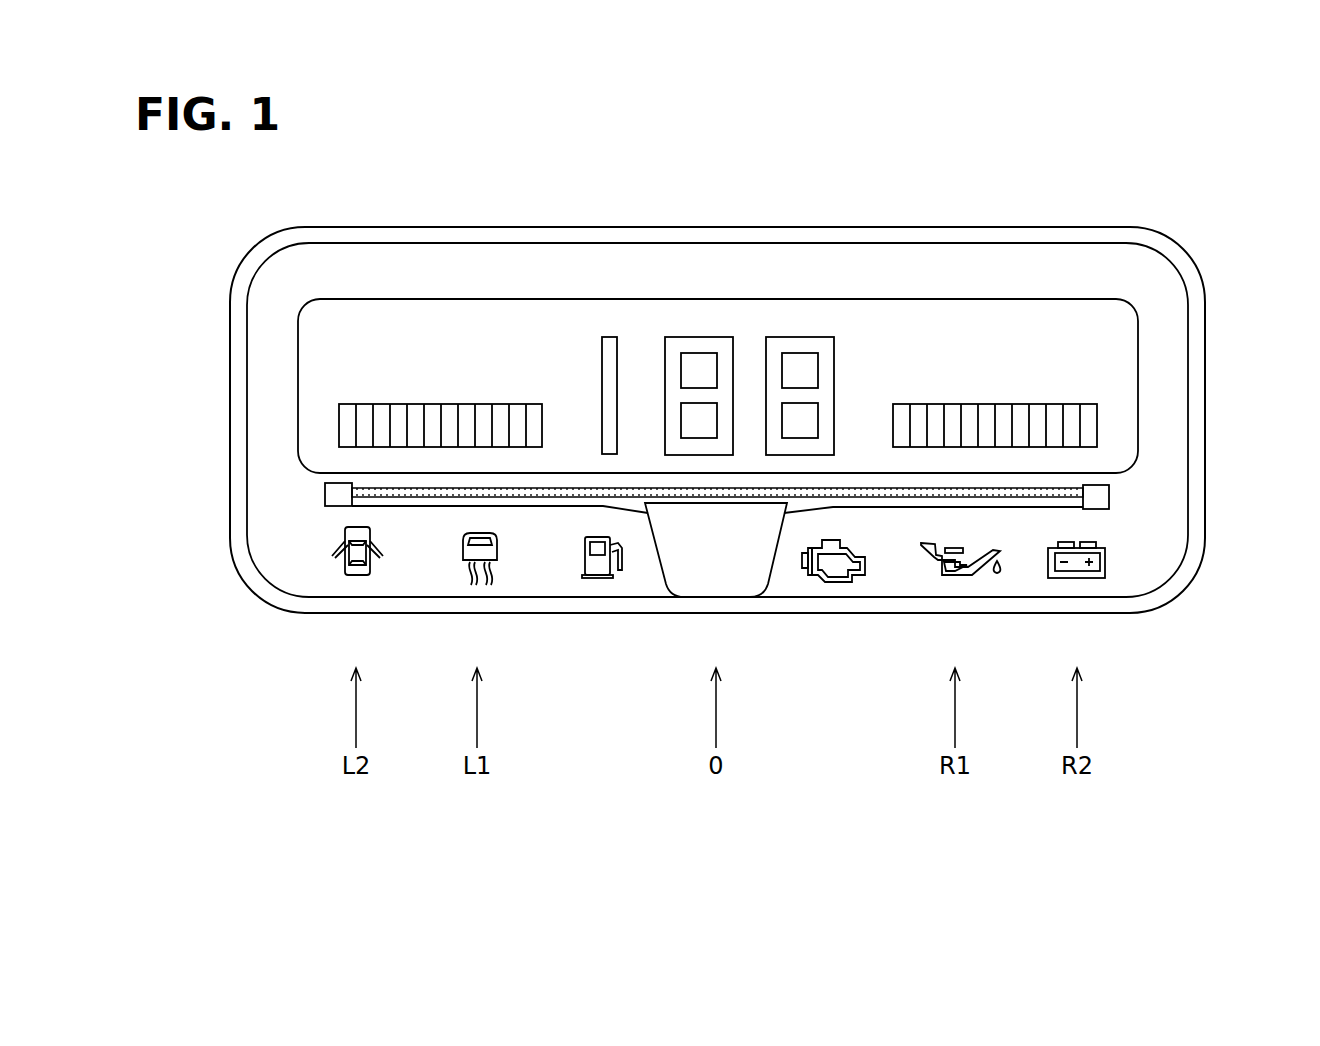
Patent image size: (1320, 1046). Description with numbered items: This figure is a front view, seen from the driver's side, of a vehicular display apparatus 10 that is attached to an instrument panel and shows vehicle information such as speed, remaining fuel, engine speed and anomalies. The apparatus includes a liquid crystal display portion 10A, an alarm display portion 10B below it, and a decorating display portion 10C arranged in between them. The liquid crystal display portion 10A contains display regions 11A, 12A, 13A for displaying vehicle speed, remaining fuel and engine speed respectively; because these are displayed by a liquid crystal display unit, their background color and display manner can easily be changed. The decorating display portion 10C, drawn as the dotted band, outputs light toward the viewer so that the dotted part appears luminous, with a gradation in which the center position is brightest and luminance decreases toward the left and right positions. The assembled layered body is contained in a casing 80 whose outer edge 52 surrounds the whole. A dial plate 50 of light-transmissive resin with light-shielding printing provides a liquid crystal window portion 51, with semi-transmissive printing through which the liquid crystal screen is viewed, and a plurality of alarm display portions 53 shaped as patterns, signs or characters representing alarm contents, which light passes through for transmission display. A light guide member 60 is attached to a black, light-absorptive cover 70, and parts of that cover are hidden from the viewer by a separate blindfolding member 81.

The display device 10 is at (1085, 227).
The liquid crystal display portion 10A is at (912, 337).
The alarm display portion 10B is at (1090, 570).
The decorating display portion 10C is at (366, 490).
The display region 11A is at (705, 337).
The display region 12A is at (1073, 404).
The display region 13A is at (378, 405).
The dial plate 50 is at (413, 268).
The liquid crystal window portion 51 is at (500, 335).
The outer edge portion 52 is at (340, 268).
The alarm display portions 53 is at (352, 557).
The light guide member 60 is at (1067, 486).
The cover 70 is at (1073, 507).
The casing 80 is at (597, 225).
The blindfolding member 81 is at (730, 568).